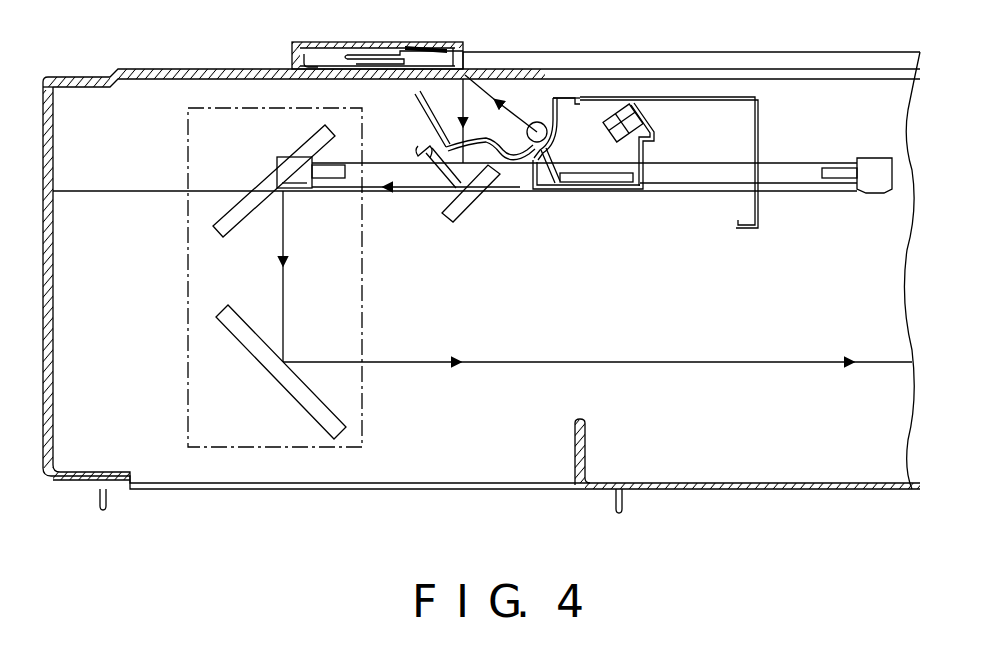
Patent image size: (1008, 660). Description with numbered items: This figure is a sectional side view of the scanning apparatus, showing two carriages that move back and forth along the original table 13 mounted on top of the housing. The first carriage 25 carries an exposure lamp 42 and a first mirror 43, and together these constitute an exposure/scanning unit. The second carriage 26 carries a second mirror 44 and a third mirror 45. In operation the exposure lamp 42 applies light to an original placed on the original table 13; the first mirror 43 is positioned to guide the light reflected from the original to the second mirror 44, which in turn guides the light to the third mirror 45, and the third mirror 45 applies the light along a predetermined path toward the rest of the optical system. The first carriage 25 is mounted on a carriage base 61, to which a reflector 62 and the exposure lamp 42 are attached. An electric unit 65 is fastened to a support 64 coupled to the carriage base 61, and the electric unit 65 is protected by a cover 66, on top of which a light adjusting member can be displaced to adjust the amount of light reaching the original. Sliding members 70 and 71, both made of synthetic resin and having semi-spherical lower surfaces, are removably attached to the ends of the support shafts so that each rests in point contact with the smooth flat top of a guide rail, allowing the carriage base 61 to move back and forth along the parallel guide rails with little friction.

The original table 13 is at (593, 68).
The first carriage 25 is at (637, 96).
The second carriage 26 is at (230, 279).
The exposure lamp 42 is at (538, 121).
The first mirror 43 is at (470, 200).
The second mirror 44 is at (262, 180).
The third mirror 45 is at (260, 356).
The carriage base 61 is at (620, 193).
The reflector 62 is at (549, 184).
The support 64 is at (642, 153).
The electric unit 65 is at (654, 100).
The cover 66 is at (740, 96).
The sliding member 70 is at (873, 168).
The sliding member 71 is at (296, 176).